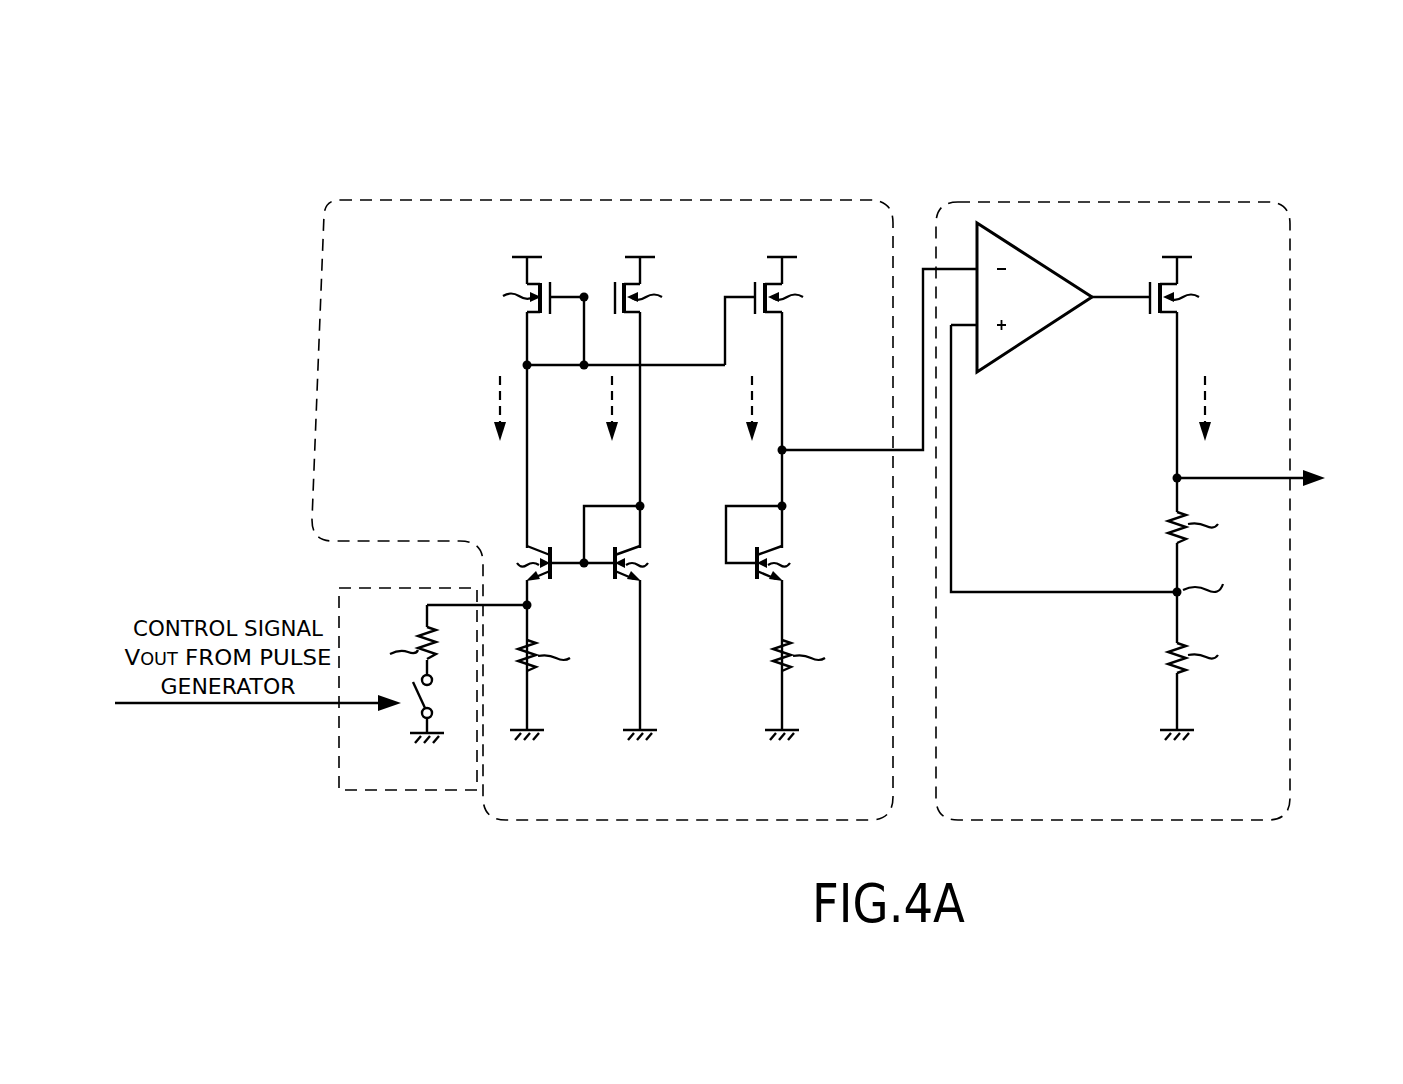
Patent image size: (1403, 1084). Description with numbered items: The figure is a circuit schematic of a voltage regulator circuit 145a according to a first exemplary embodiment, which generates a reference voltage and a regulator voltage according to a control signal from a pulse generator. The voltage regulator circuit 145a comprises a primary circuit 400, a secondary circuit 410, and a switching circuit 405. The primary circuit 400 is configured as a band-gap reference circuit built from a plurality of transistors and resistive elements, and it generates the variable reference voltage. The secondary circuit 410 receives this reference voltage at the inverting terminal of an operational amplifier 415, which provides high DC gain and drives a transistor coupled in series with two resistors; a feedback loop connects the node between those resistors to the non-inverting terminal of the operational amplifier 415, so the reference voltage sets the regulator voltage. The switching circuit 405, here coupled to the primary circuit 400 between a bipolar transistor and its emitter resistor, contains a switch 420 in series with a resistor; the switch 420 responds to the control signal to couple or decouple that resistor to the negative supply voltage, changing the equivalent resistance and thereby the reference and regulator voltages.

The voltage regulator circuit 145a is at (300, 160).
The primary circuit 400 is at (894, 227).
The switching circuit 405 is at (390, 793).
The secondary circuit 410 is at (1232, 202).
The operational amplifier 415 is at (1040, 262).
The switch 420 is at (420, 705).